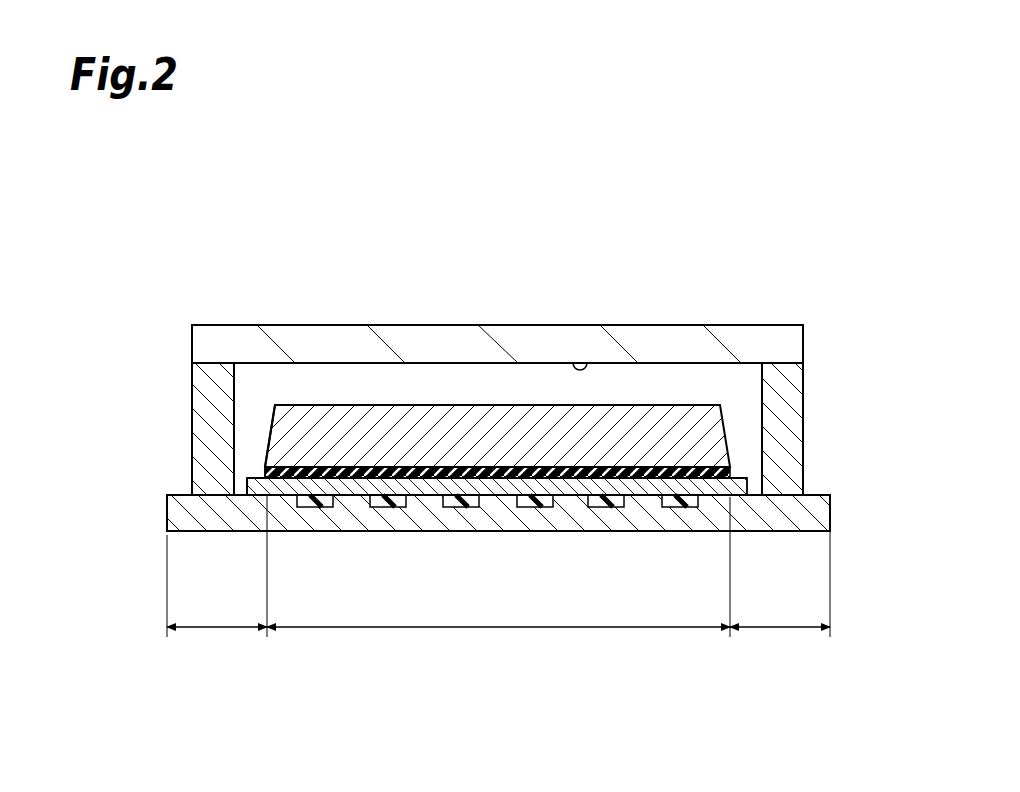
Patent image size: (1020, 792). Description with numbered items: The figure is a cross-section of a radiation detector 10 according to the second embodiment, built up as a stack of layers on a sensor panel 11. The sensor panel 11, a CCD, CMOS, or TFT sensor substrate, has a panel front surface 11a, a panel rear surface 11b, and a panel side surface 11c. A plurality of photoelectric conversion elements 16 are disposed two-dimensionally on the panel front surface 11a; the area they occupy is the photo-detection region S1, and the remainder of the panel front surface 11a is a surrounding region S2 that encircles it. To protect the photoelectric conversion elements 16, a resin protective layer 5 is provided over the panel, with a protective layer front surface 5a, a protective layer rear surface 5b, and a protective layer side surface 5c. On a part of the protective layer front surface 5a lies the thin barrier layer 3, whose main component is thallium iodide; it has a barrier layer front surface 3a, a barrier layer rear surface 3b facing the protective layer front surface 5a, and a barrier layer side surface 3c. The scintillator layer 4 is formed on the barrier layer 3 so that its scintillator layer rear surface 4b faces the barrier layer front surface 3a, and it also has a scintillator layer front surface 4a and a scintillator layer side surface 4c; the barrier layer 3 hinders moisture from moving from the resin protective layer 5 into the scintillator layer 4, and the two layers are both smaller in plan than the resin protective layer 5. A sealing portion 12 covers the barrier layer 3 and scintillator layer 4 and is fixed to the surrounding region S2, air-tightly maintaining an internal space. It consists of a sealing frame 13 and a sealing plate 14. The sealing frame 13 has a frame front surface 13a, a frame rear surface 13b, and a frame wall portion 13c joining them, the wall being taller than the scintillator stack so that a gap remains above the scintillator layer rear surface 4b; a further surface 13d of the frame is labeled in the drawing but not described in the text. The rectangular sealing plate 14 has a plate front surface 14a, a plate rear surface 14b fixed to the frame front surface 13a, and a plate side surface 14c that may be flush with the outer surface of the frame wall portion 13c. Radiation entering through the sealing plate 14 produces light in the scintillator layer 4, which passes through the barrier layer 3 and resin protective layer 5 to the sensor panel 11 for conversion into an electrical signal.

The radiation detector 10 is at (503, 211).
The sensor panel 11 is at (832, 528).
The panel front surface 11a is at (177, 492).
The panel rear surface 11b is at (710, 532).
The panel side surface 11c is at (166, 506).
The sealing portion 12 is at (514, 411).
The sealing frame 13 is at (806, 374).
The frame front surface 13a is at (213, 364).
The frame rear surface 13b is at (205, 498).
The frame wall portion 13c is at (191, 388).
The inner side surface of frame 13d is at (761, 386).
The sealing plate 14 is at (806, 337).
The plate front surface 14a is at (618, 325).
The plate rear surface 14b is at (578, 362).
The plate side surface 14c is at (192, 340).
The photoelectric conversion element 16 is at (317, 507).
The barrier layer 3 is at (741, 472).
The barrier layer front surface 3a is at (512, 479).
The barrier layer rear surface 3b is at (566, 471).
The barrier layer side surface 3c is at (263, 475).
The scintillator layer 4 is at (738, 440).
The scintillator layer front surface 4a is at (446, 470).
The scintillator layer rear surface 4b is at (325, 403).
The scintillator layer side surface 4c is at (267, 427).
The resin protective layer 5 is at (756, 487).
The protective layer front surface 5a is at (626, 497).
The protective layer rear surface 5b is at (565, 480).
The protective layer side surface 5c is at (243, 484).
The photo-detection region S1 is at (497, 629).
The surrounding region S2 is at (213, 629).